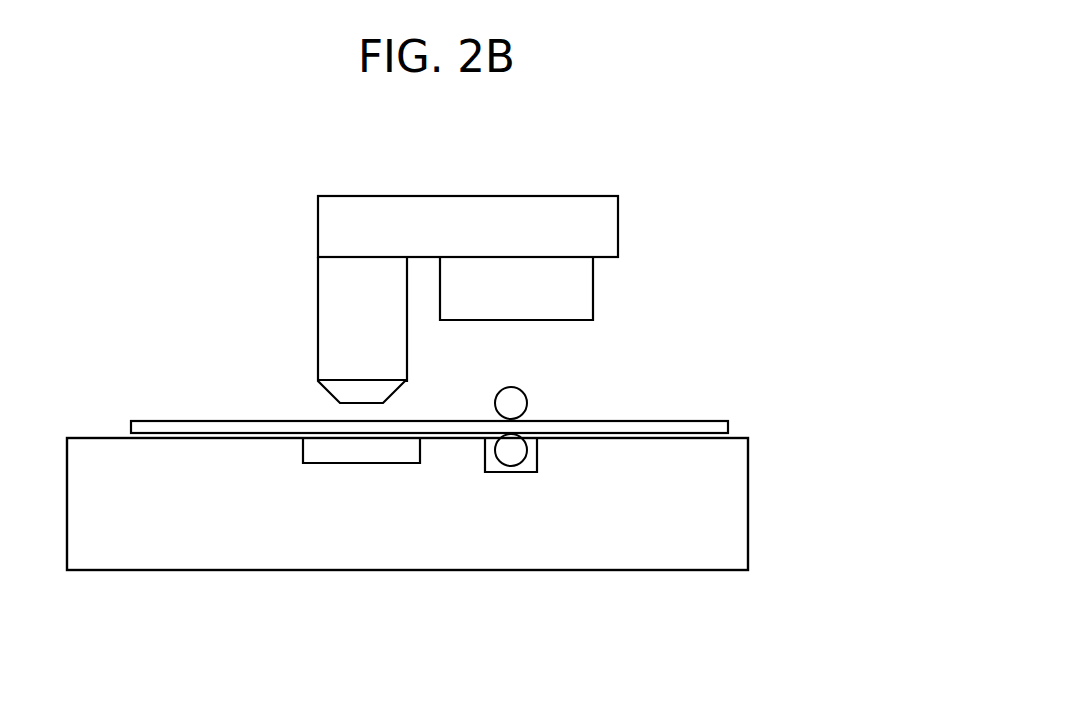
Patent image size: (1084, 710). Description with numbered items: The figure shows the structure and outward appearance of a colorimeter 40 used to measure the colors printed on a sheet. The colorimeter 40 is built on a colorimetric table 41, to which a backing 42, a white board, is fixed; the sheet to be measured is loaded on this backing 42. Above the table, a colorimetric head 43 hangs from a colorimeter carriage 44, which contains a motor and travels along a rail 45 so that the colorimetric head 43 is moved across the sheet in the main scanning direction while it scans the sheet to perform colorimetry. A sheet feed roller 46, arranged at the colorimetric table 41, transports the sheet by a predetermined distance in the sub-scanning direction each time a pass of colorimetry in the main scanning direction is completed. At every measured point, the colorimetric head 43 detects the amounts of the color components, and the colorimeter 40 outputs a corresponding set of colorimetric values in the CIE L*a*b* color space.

The colorimeter 40 is at (641, 96).
The colorimetric table 41 is at (748, 498).
The backing 42 is at (368, 452).
The colorimetric head 43 is at (336, 336).
The colorimeter carriage 44 is at (522, 210).
The rail 45 is at (573, 288).
The sheet feed roller 46 is at (512, 452).